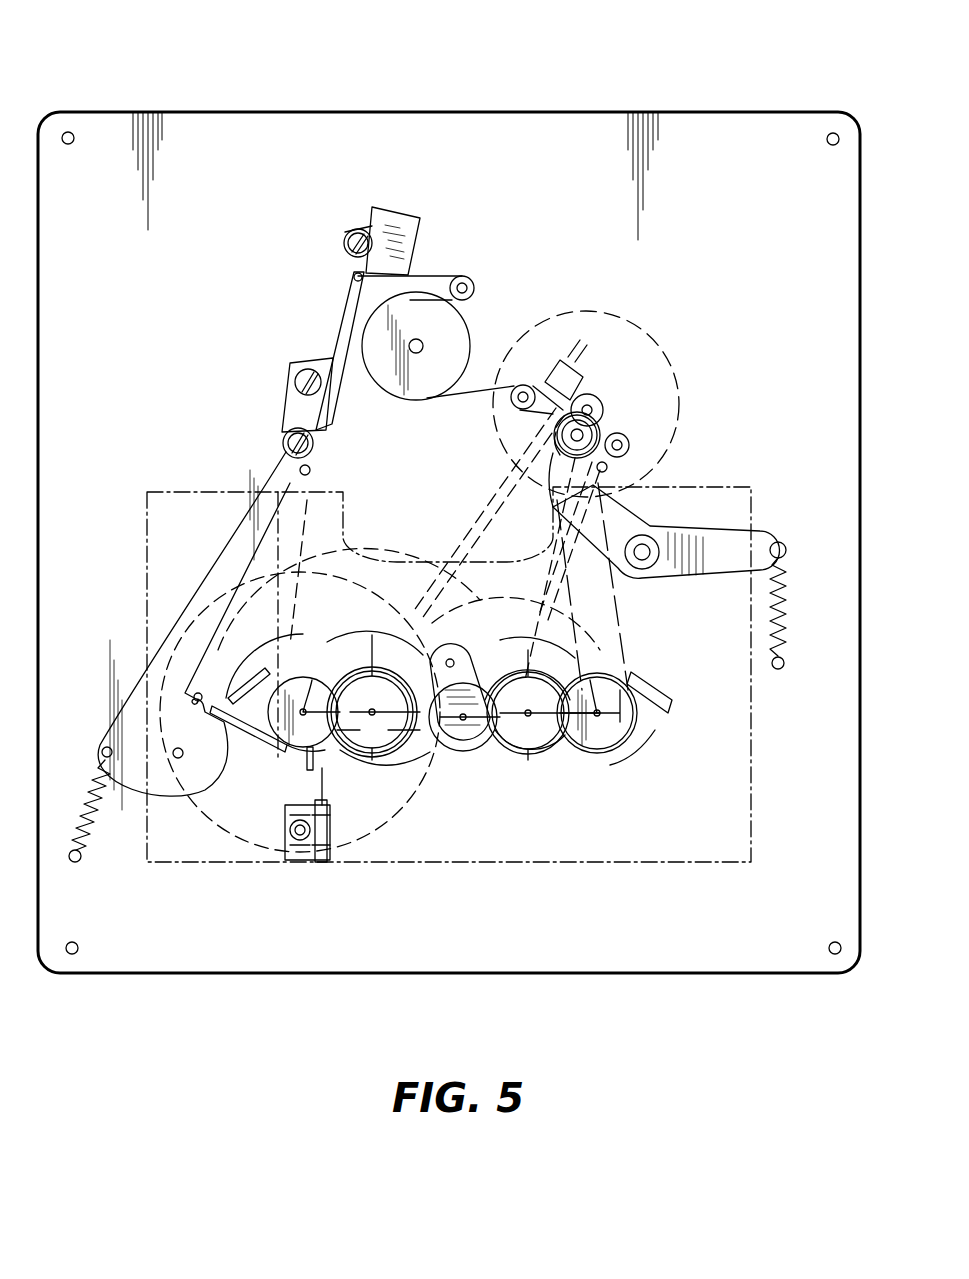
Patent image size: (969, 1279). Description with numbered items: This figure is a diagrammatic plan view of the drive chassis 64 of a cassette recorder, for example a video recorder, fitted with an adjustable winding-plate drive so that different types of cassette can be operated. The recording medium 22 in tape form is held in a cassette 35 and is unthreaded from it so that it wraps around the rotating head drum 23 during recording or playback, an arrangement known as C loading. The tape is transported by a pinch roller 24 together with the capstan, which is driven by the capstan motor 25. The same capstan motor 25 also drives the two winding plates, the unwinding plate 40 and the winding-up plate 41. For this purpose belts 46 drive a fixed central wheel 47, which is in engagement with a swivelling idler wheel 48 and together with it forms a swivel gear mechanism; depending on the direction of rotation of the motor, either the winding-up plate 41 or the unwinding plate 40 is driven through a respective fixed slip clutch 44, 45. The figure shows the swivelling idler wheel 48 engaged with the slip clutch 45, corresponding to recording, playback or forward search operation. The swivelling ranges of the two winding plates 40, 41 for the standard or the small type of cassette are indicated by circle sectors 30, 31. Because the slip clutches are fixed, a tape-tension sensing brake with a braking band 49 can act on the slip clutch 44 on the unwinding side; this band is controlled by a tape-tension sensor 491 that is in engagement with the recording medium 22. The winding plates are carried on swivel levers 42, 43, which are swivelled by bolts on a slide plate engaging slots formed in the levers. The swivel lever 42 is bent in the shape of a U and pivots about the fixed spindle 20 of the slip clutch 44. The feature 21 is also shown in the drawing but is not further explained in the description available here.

The drive chassis 64 is at (553, 112).
The recording medium 22 is at (347, 313).
The head drum 23 is at (458, 326).
The pinch roller 24 is at (554, 435).
The capstan motor 25 is at (681, 405).
The belts 46 is at (488, 497).
The circle sector 31 is at (667, 571).
The tape-tension sensor 491 is at (284, 443).
The circle sector 30 is at (341, 654).
The unwinding plate 40 is at (283, 745).
The swivel lever 42 is at (246, 737).
The slip clutch 44 is at (385, 744).
The fixed spindle 20 is at (326, 815).
The braking band 49 is at (408, 744).
The swivelling idler wheel 48 is at (463, 744).
The fixed central wheel 47 is at (467, 612).
The slip clutch 45 is at (528, 745).
The guide 21 is at (558, 746).
The winding-up plate 41 is at (613, 744).
The swivel lever 43 is at (652, 716).
The cassette 35 is at (752, 797).